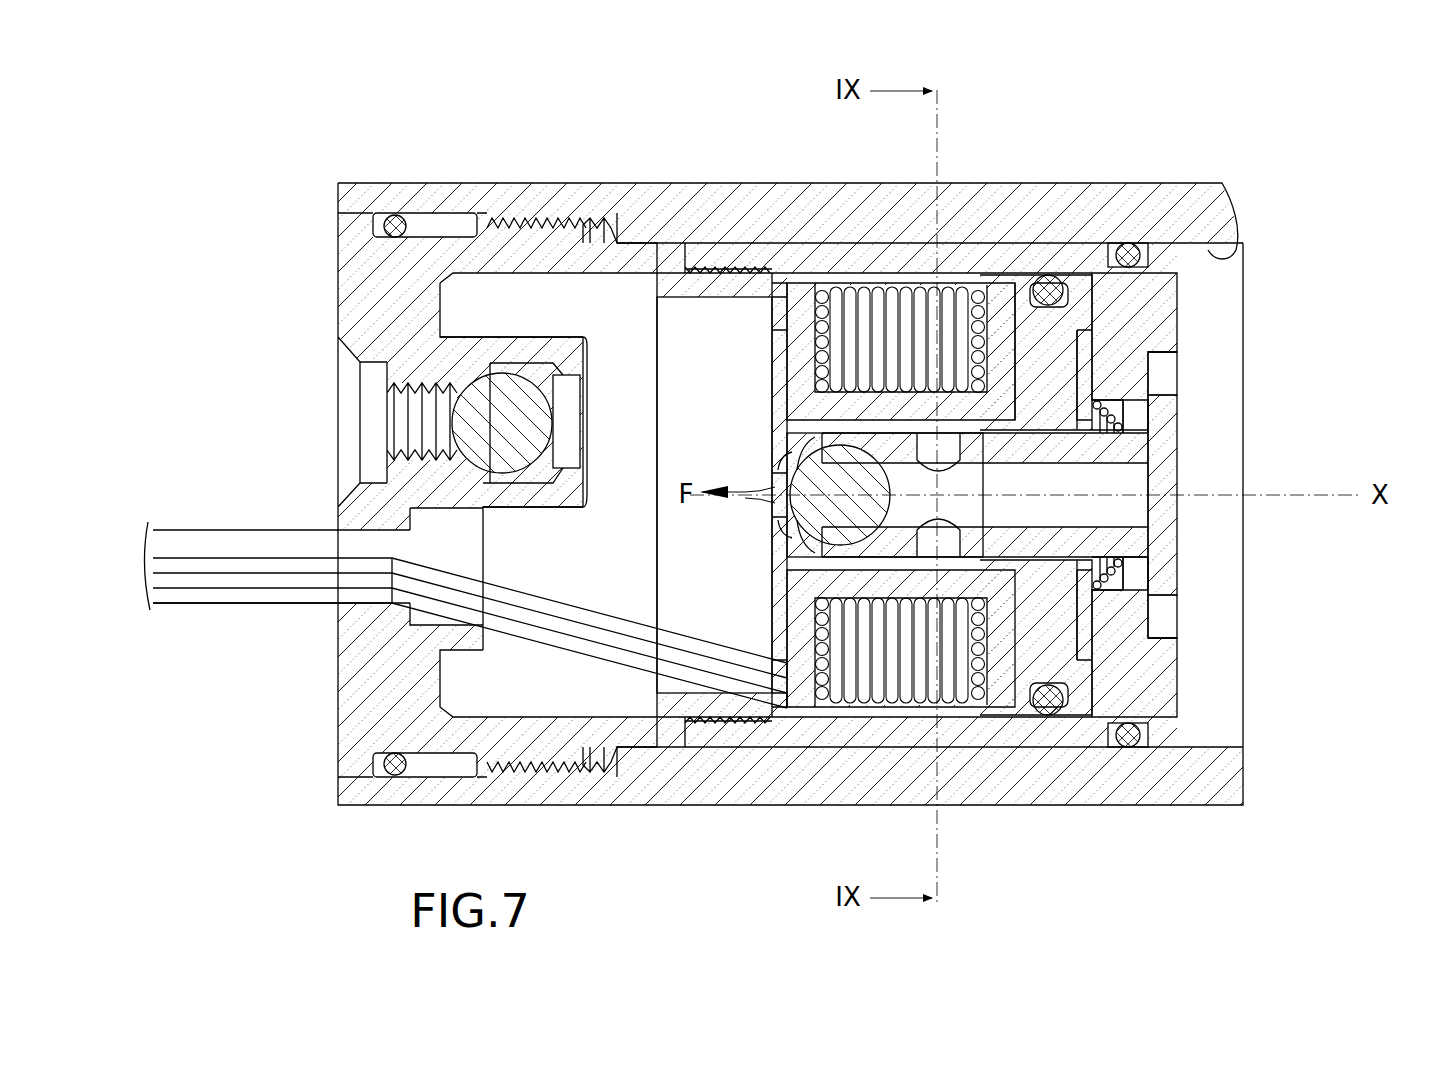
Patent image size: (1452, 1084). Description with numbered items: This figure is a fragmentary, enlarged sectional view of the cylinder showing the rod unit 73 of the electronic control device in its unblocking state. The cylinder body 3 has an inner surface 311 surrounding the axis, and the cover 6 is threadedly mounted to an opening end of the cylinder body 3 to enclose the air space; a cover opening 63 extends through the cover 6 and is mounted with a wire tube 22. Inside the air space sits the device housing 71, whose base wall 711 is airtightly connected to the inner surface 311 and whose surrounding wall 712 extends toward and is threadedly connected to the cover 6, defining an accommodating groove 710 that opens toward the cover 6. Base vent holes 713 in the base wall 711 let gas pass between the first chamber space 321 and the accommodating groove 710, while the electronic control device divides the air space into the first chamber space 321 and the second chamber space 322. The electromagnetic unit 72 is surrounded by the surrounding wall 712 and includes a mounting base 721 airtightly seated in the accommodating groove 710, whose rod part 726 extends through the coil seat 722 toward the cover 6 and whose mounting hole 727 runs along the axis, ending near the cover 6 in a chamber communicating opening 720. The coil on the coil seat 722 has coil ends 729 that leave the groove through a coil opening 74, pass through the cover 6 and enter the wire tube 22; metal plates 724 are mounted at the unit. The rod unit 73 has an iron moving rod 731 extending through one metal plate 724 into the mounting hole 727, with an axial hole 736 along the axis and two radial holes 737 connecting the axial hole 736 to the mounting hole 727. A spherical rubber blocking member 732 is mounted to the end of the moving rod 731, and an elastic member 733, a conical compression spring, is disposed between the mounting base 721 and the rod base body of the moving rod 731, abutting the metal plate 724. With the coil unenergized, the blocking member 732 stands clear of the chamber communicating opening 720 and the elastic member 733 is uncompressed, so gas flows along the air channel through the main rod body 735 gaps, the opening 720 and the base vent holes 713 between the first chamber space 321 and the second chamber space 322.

The cylinder body 3 is at (1139, 178).
The cover 6 is at (333, 256).
The wire tube 22 is at (188, 527).
The cover opening 63 is at (452, 530).
The device housing 71 is at (970, 262).
The surrounding wall 712 is at (1120, 495).
The electromagnetic unit 72 is at (896, 700).
The rod unit 73 is at (1060, 718).
The coil opening 74 is at (762, 690).
The inner surface 311 is at (1228, 244).
The first chamber space 321 is at (1237, 440).
The second chamber space 322 is at (523, 298).
The accommodating groove 710 is at (778, 292).
The base wall 711 is at (1157, 315).
The base vent holes 713 is at (1165, 368).
The chamber communicating opening 720 is at (662, 403).
The mounting base 721 is at (1090, 690).
The coil seat 722 is at (999, 305).
The metal plates 724 is at (755, 320).
The rod part 726 is at (690, 440).
The mounting hole 727 is at (776, 722).
The coil ends 729 is at (188, 570).
The moving rod 731 is at (1137, 420).
The blocking member 732 is at (770, 563).
The elastic member 733 is at (1130, 578).
The main rod body 735 is at (1025, 570).
The axial hole 736 is at (1150, 497).
The radial holes 737 is at (925, 445).